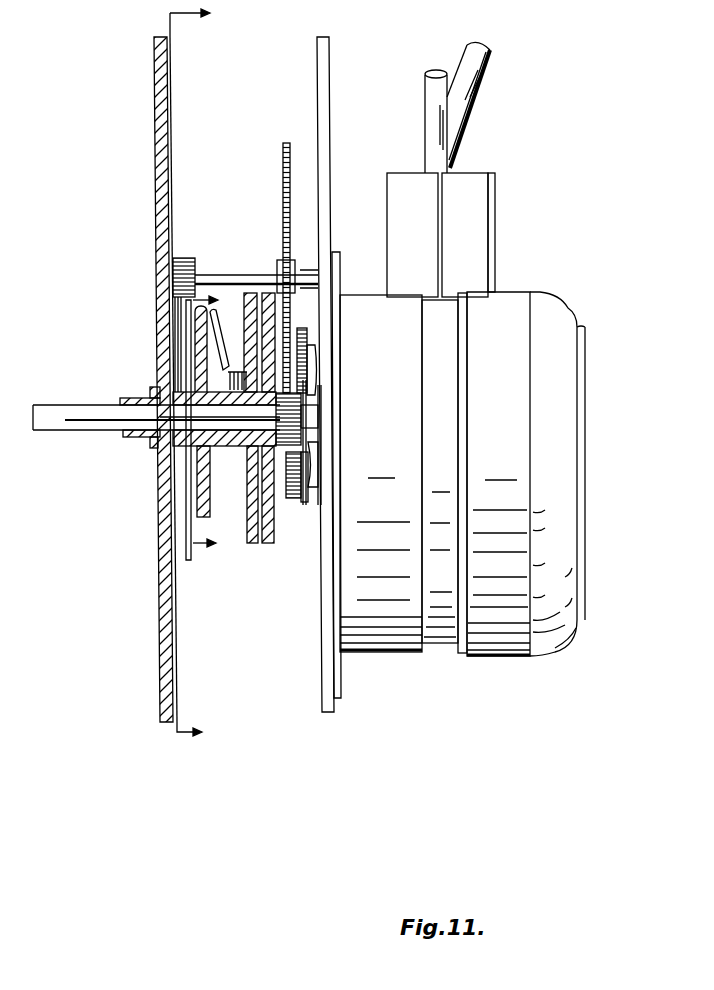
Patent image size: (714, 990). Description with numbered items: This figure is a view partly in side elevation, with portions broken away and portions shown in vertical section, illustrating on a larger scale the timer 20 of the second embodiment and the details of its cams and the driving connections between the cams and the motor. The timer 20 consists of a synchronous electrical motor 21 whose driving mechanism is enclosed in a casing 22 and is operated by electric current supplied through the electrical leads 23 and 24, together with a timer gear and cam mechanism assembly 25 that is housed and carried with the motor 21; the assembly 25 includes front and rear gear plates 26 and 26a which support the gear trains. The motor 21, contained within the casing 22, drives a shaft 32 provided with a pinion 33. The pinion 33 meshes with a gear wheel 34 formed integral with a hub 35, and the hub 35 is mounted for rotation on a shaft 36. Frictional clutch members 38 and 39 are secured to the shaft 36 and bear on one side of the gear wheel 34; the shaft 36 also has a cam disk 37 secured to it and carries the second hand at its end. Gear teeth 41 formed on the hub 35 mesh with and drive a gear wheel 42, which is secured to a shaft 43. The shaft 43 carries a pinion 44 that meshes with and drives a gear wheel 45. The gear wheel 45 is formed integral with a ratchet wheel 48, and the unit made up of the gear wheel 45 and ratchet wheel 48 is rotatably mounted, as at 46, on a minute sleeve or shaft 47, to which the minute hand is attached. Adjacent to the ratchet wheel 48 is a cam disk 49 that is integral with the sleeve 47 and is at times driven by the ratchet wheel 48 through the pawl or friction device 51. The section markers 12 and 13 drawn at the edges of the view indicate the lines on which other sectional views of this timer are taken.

The section line 12 is at (203, 375).
The section line 13 is at (214, 425).
The timer 20 is at (180, 122).
The synchronous electrical motor 21 is at (495, 666).
The casing 22 is at (560, 423).
The electrical lead 23 is at (462, 107).
The electrical lead 24 is at (430, 100).
The timer gear and cam mechanism assembly 25 is at (158, 520).
The front gear plate 26 is at (163, 630).
The rear gear plate 26a is at (327, 553).
The shaft 32 is at (318, 490).
The pinion 33 is at (293, 500).
The gear wheel 34 is at (303, 505).
The hub 35 is at (318, 425).
The shaft 36 is at (53, 418).
The cam disk 37 is at (277, 262).
The frictional clutch member 38 is at (307, 357).
The frictional clutch member 39 is at (318, 443).
The gear teeth 41 is at (286, 385).
The gear wheel 42 is at (280, 167).
The shaft 43 is at (237, 250).
The pinion 44 is at (206, 224).
The gear wheel 45 is at (177, 317).
The rotatable mounting 46 is at (152, 441).
The minute sleeve or shaft 47 is at (147, 398).
The ratchet wheel 48 is at (201, 490).
The cam disk 49 is at (250, 505).
The pawl or friction device 51 is at (203, 343).